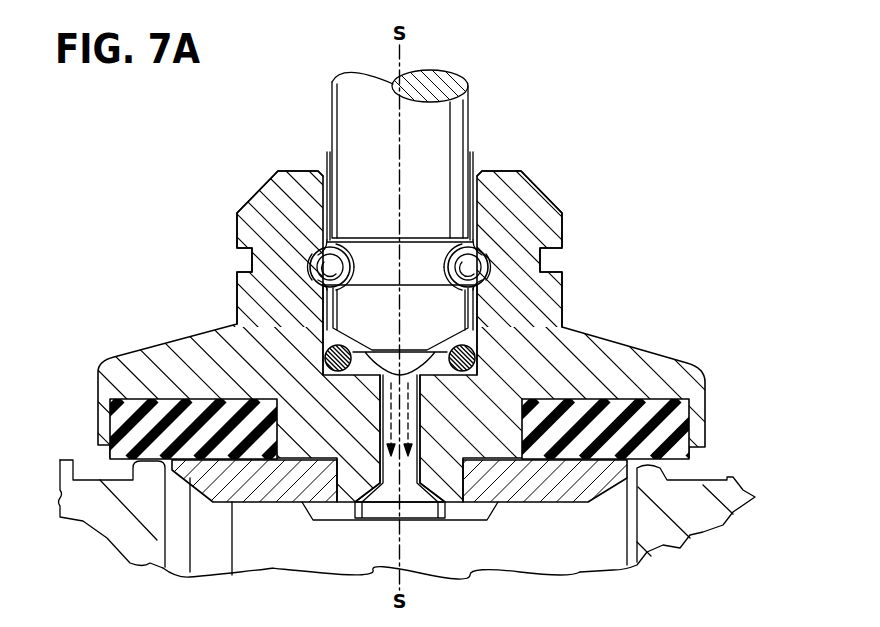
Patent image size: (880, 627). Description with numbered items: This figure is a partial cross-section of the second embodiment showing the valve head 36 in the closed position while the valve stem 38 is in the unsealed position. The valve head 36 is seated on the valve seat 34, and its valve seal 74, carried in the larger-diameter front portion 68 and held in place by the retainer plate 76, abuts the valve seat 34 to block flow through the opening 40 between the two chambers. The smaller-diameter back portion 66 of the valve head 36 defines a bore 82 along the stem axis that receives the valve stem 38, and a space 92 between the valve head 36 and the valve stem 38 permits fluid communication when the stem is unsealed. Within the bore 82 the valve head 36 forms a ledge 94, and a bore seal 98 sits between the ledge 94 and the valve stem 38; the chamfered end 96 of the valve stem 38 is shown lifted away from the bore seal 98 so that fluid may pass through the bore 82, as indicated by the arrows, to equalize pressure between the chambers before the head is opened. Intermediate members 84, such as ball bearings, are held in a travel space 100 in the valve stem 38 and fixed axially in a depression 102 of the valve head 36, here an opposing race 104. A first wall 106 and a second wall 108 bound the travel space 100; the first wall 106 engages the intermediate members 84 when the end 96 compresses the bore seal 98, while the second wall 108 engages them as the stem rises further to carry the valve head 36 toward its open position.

The valve seat 34 is at (115, 488).
The valve head 36 is at (661, 366).
The valve stem 38 is at (458, 128).
The opening 40 is at (237, 542).
The back portion 66 is at (523, 190).
The front portion 68 is at (698, 447).
The valve seal 74 is at (167, 410).
The retainer plate 76 is at (563, 505).
The bore 82 is at (325, 208).
The intermediate members 84 is at (292, 268).
The space 92 is at (471, 197).
The ledge 94 is at (440, 378).
The end 96 is at (417, 337).
The bore seal 98 is at (327, 350).
The travel space 100 is at (490, 261).
The depression 102 is at (493, 276).
The opposing race 104 is at (498, 273).
The first wall 106 is at (342, 240).
The second wall 108 is at (352, 285).